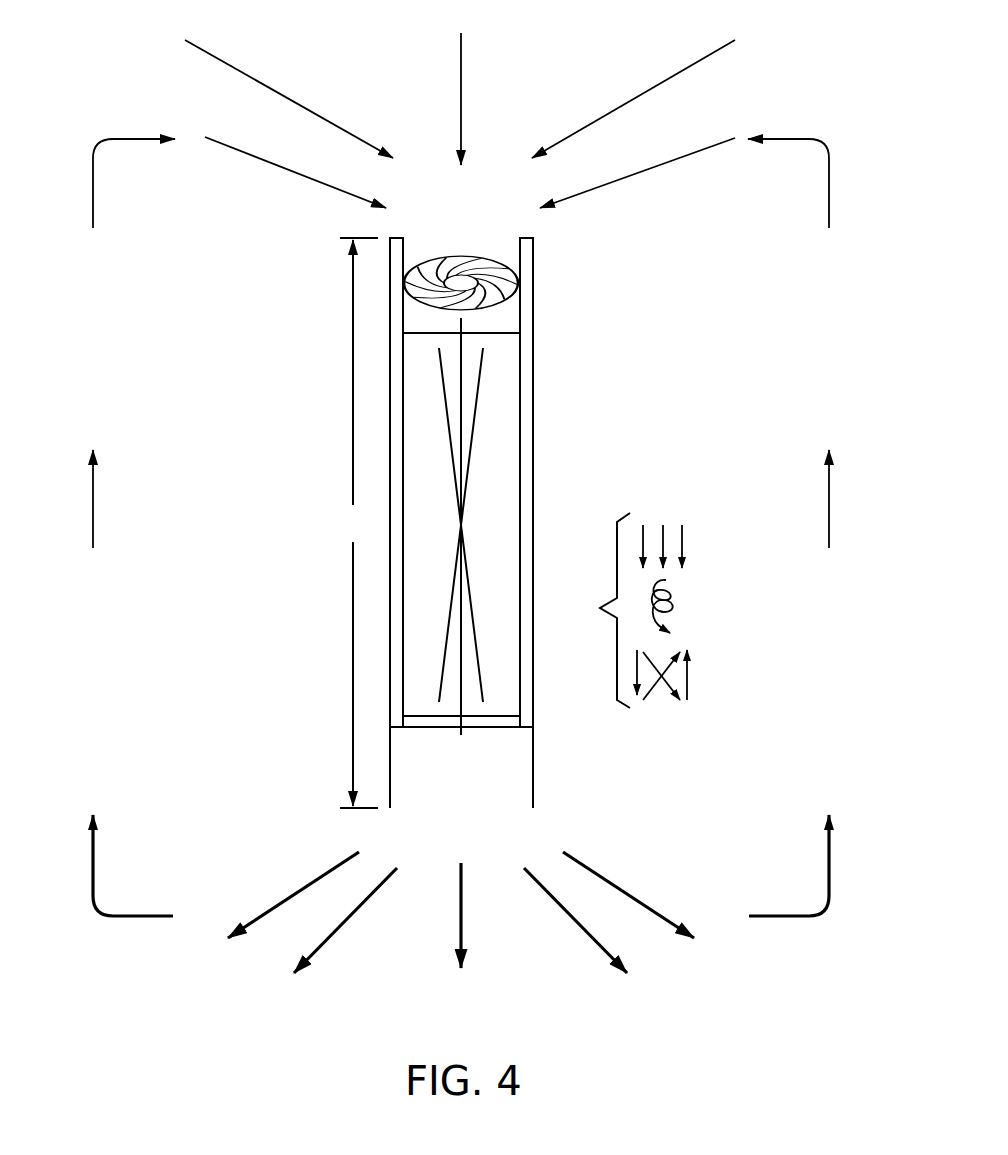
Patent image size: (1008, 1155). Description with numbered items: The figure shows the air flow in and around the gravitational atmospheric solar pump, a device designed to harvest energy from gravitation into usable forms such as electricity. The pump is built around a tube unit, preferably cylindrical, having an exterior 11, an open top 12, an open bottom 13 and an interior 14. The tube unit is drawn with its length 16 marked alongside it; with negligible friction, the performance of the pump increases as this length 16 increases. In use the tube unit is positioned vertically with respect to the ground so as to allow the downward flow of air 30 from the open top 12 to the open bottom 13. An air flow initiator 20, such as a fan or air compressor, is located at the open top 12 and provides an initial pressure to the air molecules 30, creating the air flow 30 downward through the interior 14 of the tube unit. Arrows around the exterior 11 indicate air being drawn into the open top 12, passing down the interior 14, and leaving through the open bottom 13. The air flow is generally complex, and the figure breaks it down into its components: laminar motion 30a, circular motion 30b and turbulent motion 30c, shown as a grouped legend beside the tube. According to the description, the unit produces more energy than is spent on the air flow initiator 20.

The exterior 11 is at (533, 511).
The open top 12 is at (491, 239).
The open bottom 13 is at (495, 792).
The interior 14 is at (497, 466).
The length 16 is at (359, 523).
The air flow initiator 20 is at (462, 262).
The air flow 30 is at (462, 92).
The laminar motion 30a is at (682, 545).
The circular motion 30b is at (670, 600).
The turbulent motion 30c is at (688, 675).